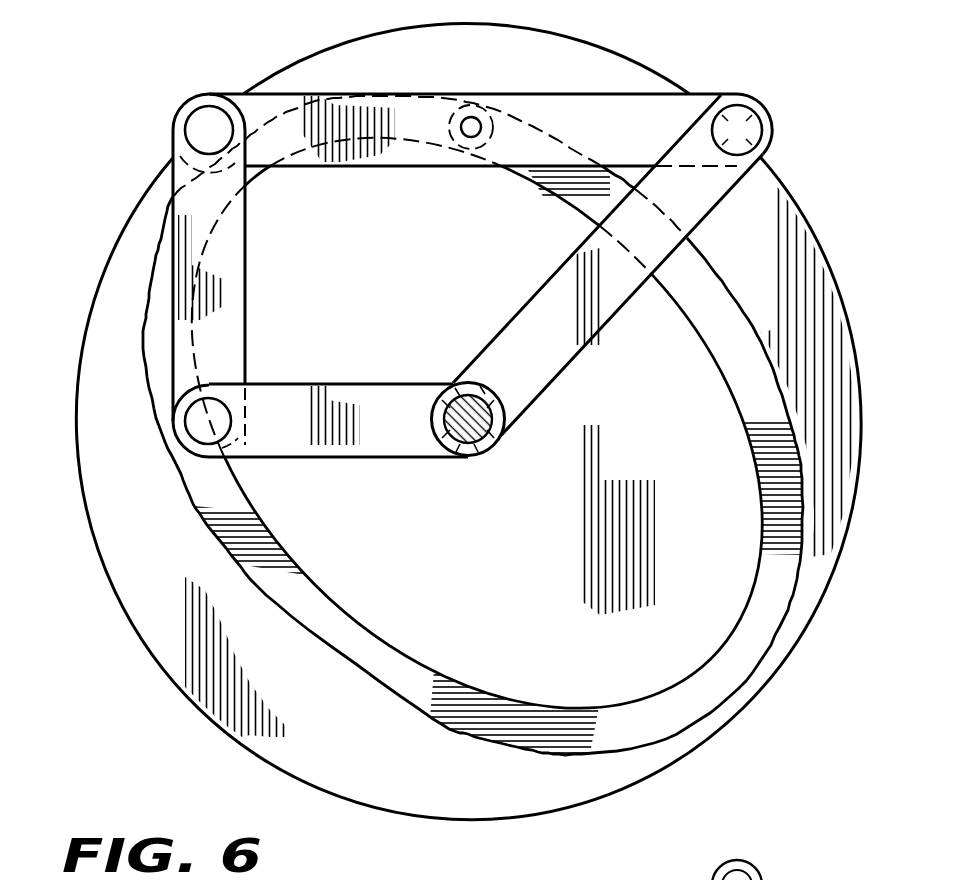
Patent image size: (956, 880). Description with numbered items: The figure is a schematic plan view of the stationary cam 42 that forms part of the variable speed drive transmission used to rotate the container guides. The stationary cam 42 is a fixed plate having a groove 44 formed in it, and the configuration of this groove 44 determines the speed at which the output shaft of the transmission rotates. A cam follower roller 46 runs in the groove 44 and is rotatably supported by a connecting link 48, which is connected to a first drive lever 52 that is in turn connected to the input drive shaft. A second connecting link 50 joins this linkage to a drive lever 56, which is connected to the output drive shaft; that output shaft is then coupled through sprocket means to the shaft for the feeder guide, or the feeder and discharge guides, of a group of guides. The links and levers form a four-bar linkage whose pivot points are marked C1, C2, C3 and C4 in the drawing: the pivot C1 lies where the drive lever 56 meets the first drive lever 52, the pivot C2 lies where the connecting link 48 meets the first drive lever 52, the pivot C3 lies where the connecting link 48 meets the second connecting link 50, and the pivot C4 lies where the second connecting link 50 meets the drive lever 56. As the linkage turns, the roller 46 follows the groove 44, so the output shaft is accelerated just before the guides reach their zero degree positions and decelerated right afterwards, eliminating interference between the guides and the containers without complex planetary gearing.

The stationary cam 42 is at (523, 565).
The groove 44 is at (460, 688).
The cam follower roller 46 is at (472, 107).
The connecting link 48 is at (287, 107).
The second connecting link 50 is at (178, 192).
The first drive lever 52 is at (580, 322).
The drive lever 56 is at (332, 390).
The joint C1 is at (468, 430).
The joint C2 is at (740, 120).
The joint C3 is at (215, 120).
The joint C4 is at (200, 405).